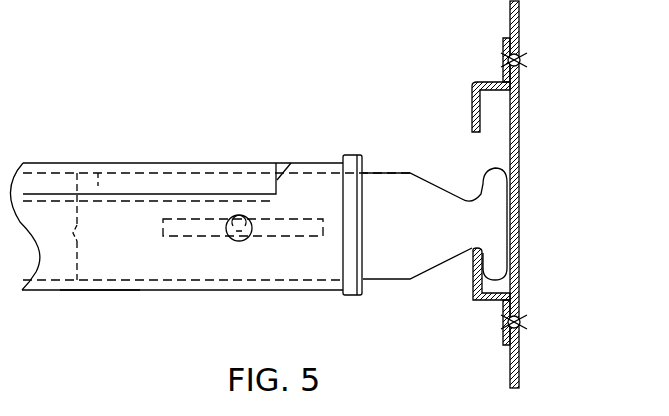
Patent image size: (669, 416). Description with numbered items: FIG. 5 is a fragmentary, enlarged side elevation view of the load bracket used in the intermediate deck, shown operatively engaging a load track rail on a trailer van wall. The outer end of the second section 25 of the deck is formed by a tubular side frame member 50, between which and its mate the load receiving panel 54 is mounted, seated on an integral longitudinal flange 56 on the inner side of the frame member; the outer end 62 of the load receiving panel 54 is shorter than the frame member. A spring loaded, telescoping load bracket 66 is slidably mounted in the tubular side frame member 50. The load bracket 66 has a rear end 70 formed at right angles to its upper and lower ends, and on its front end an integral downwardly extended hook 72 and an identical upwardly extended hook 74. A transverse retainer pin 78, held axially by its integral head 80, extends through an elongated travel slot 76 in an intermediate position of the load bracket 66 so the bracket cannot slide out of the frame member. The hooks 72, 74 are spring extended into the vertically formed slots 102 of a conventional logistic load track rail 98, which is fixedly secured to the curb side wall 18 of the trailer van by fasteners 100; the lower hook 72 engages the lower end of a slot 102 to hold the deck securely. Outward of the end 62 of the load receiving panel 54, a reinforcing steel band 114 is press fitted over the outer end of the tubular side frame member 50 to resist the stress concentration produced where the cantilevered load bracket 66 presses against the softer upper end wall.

The curb side wall 18 is at (520, 196).
The second section 25 is at (116, 292).
The side frame member 50 is at (172, 265).
The load receiving panel 54 is at (98, 185).
The longitudinal flange 56 is at (45, 202).
The outer end of load receiving panel 62 is at (290, 158).
The load bracket 66 is at (402, 283).
The rear end 70 is at (87, 238).
The downwardly extended hook 72 is at (475, 295).
The upwardly extended hook 74 is at (495, 177).
The travel slot 76 is at (272, 233).
The retainer pin 78 is at (236, 238).
The head 80 is at (228, 234).
The load track rail 98 is at (484, 77).
The fastener 100 is at (502, 62).
The slot 102 is at (470, 138).
The reinforcing steel band 114 is at (360, 153).